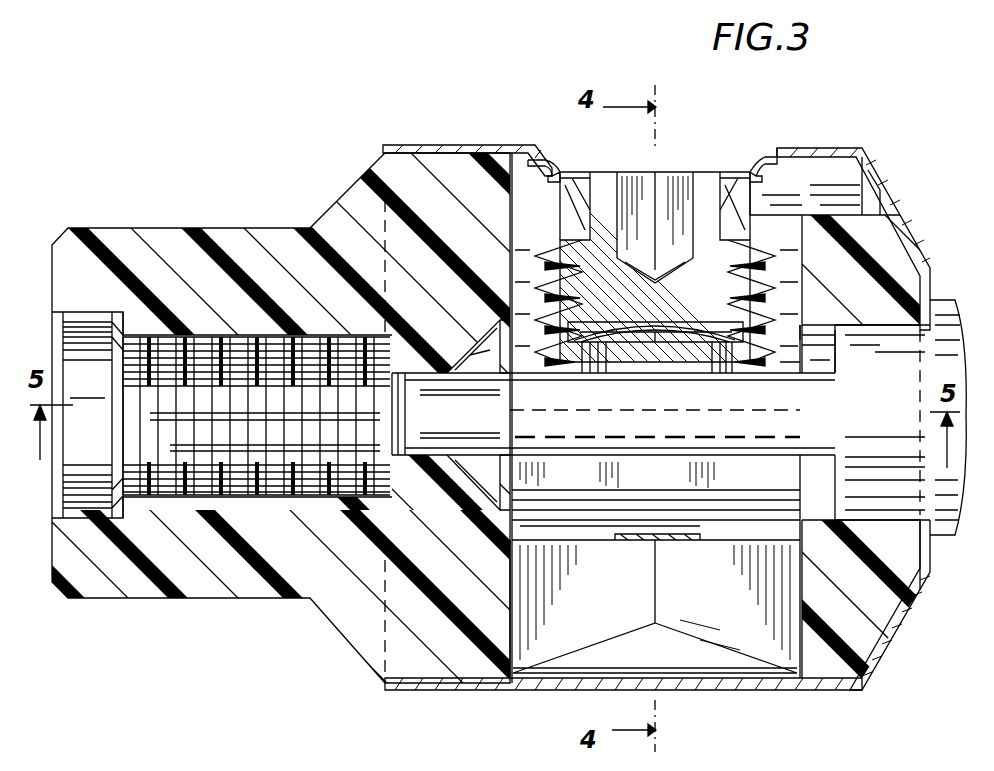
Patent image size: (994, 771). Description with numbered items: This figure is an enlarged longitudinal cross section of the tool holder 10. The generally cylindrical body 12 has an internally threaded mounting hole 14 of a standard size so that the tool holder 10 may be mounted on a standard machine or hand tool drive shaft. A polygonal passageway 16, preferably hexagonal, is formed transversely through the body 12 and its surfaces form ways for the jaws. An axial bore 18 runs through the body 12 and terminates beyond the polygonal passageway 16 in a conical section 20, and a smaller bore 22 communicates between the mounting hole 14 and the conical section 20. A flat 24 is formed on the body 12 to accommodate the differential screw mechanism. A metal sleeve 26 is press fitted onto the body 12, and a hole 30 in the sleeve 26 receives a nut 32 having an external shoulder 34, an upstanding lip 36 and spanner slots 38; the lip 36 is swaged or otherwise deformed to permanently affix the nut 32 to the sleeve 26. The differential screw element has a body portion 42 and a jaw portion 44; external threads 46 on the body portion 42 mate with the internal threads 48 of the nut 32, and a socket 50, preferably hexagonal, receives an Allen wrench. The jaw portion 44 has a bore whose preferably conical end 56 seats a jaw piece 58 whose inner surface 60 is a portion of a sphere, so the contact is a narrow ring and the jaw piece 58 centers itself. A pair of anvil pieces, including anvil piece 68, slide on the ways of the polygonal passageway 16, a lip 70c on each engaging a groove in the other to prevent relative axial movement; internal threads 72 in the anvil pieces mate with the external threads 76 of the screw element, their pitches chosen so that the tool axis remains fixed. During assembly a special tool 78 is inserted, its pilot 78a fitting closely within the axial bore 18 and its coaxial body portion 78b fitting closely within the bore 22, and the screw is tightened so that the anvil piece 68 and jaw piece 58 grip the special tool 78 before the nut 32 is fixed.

The tool holder 10 is at (340, 170).
The body 12 is at (358, 170).
The mounting hole 14 is at (262, 340).
The polygonal passageway 16 is at (520, 668).
The axial bore 18 is at (812, 335).
The conical section 20 is at (455, 356).
The bore 22 is at (405, 470).
The flat 24 is at (858, 222).
The sleeve 26 is at (488, 147).
The hole 30 is at (752, 185).
The nut 32 is at (566, 176).
The external shoulder 34 is at (524, 162).
The upstanding lip 36 is at (756, 170).
The spanner slots 38 is at (672, 178).
The body portion 42 is at (600, 178).
The jaw portion 44 is at (775, 320).
The external threads 46 is at (762, 206).
The internal threads 48 is at (704, 215).
The socket 50 is at (640, 200).
The end 56 is at (605, 340).
The jaw piece 58 is at (665, 340).
The inner surface 60 is at (655, 318).
The anvil piece 68 is at (796, 258).
The lip 70c is at (680, 545).
The internal threads 72 is at (548, 247).
The external threads 76 is at (535, 290).
The special tool 78 is at (940, 300).
The pilot 78a is at (897, 336).
The body portion 78b is at (448, 500).